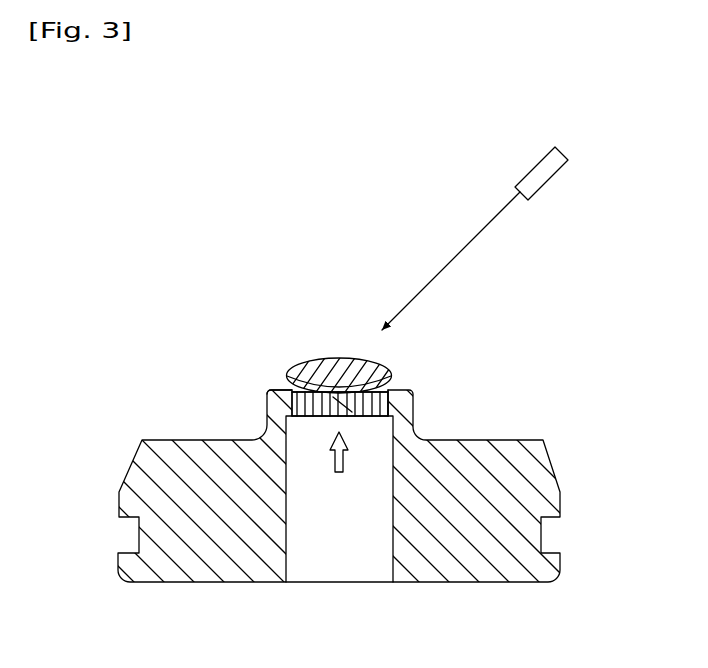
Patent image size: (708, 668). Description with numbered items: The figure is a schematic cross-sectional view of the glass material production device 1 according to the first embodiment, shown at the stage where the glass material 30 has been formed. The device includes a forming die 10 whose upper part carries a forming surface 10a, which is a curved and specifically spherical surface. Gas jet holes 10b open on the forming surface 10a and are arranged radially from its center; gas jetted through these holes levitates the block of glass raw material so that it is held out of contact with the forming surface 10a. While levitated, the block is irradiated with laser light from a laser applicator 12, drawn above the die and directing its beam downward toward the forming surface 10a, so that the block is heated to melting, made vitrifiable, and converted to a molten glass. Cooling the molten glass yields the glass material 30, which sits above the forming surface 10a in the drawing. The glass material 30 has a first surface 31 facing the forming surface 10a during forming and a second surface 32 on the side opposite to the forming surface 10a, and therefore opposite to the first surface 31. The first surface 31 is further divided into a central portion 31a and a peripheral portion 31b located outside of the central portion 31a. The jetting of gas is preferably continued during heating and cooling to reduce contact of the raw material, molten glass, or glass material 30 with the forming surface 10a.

The glass material production device 1 is at (395, 223).
The forming die 10 is at (265, 415).
The forming surface 10a is at (357, 392).
The gas jet holes 10b is at (277, 390).
The laser applicator 12 is at (542, 190).
The glass material 30 is at (395, 373).
The first surface 31 is at (348, 398).
The central portion 31a is at (333, 398).
The peripheral portion 31b is at (383, 385).
The second surface 32 is at (343, 395).